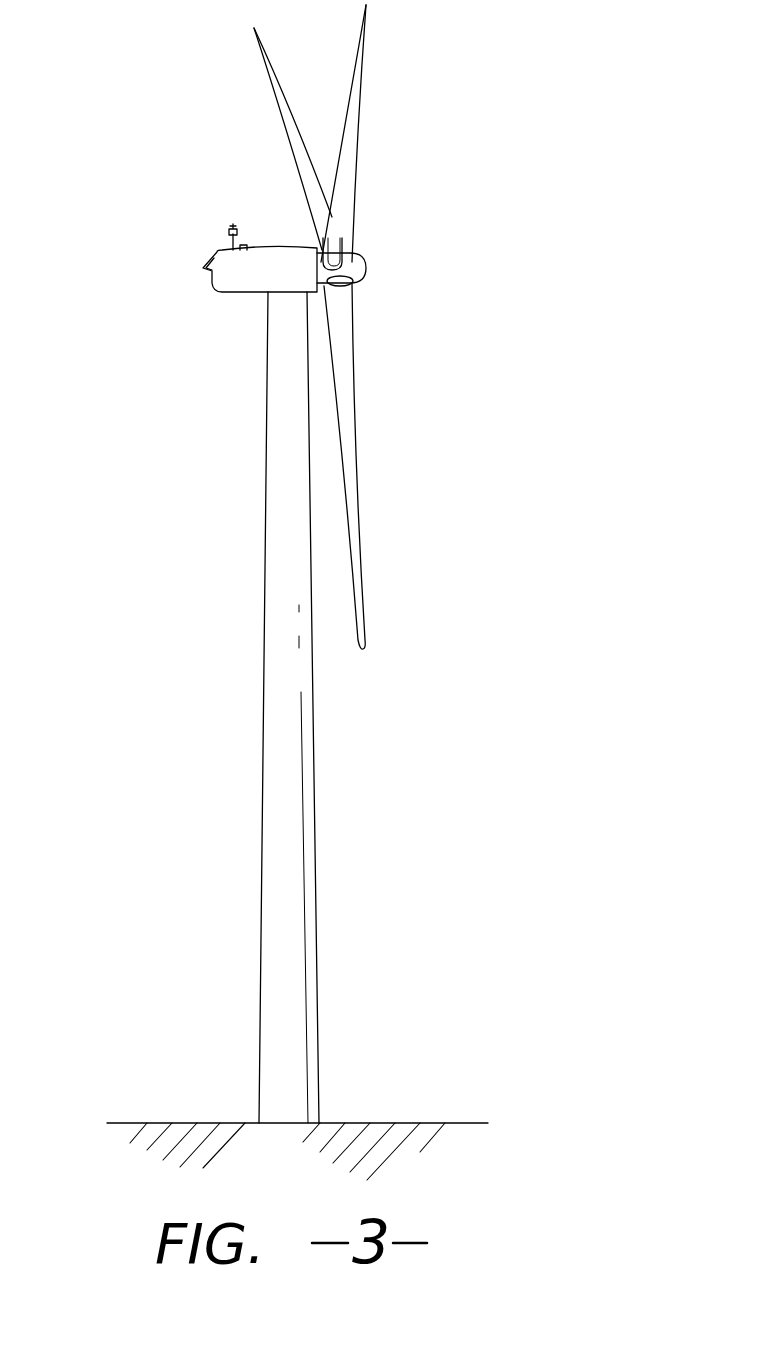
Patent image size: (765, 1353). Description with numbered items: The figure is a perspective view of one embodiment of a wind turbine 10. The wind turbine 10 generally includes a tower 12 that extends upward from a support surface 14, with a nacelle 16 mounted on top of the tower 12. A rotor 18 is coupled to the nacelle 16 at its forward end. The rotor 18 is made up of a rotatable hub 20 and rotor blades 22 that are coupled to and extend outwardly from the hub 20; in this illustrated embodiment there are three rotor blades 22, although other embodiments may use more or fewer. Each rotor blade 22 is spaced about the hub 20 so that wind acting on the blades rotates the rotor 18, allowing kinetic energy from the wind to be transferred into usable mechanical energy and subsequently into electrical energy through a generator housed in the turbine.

The wind turbine 10 is at (475, 110).
The tower 12 is at (275, 821).
The support surface 14 is at (385, 1123).
The nacelle 16 is at (246, 295).
The rotor 18 is at (383, 278).
The rotatable hub 20 is at (360, 268).
The rotor blade 22 is at (277, 108).